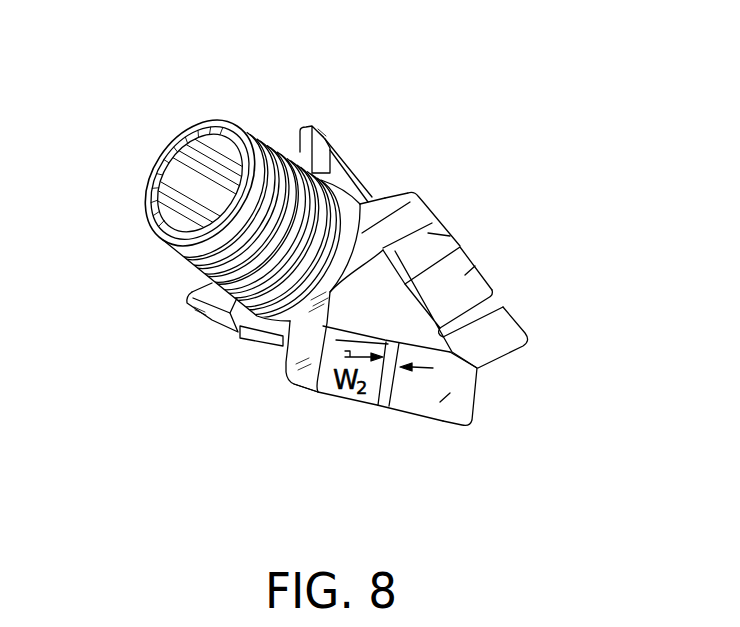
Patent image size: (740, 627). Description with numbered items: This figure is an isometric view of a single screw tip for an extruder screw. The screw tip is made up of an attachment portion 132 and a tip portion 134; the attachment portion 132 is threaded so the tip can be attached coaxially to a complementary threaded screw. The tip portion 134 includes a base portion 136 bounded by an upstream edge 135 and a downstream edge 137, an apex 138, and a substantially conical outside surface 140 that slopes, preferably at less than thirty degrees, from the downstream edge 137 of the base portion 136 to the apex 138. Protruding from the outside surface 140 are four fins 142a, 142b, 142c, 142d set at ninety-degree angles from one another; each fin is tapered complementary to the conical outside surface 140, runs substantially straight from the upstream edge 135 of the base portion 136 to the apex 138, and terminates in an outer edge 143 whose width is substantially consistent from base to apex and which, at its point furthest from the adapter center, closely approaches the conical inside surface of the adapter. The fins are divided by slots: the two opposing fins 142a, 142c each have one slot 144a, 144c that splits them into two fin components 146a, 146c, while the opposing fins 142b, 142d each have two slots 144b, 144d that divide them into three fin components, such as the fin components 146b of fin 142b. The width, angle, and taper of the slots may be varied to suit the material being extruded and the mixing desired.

The attachment portion 132 is at (156, 265).
The tip portion 134 is at (527, 297).
The upstream edge 135 is at (410, 192).
The base portion 136 is at (422, 204).
The downstream edge 137 is at (438, 215).
The apex 138 is at (477, 370).
The outside surface 140 is at (425, 309).
The fin 142a is at (462, 437).
The fin 142b is at (535, 342).
The fin 142c is at (314, 122).
The fin 142d is at (192, 318).
The outer edge 143 is at (318, 395).
The slot 144a is at (380, 404).
The slots 144b is at (452, 243).
The slot 144c is at (393, 195).
The slots 144d is at (245, 335).
The fin components 146a is at (286, 356).
The fin components 146b is at (442, 232).
The fin components 146c is at (383, 182).